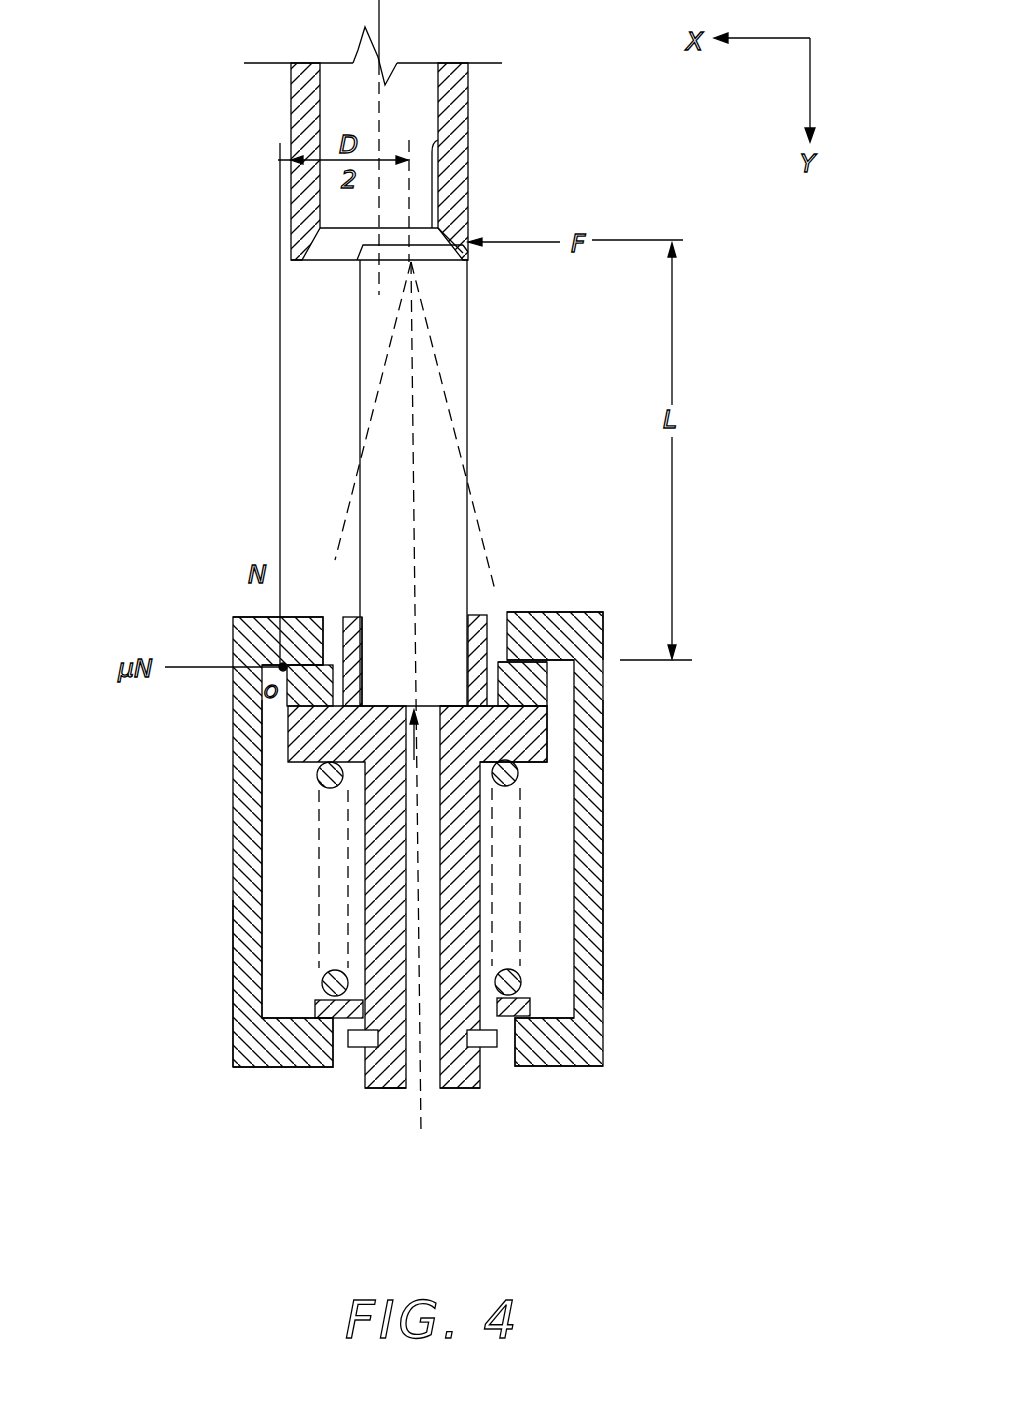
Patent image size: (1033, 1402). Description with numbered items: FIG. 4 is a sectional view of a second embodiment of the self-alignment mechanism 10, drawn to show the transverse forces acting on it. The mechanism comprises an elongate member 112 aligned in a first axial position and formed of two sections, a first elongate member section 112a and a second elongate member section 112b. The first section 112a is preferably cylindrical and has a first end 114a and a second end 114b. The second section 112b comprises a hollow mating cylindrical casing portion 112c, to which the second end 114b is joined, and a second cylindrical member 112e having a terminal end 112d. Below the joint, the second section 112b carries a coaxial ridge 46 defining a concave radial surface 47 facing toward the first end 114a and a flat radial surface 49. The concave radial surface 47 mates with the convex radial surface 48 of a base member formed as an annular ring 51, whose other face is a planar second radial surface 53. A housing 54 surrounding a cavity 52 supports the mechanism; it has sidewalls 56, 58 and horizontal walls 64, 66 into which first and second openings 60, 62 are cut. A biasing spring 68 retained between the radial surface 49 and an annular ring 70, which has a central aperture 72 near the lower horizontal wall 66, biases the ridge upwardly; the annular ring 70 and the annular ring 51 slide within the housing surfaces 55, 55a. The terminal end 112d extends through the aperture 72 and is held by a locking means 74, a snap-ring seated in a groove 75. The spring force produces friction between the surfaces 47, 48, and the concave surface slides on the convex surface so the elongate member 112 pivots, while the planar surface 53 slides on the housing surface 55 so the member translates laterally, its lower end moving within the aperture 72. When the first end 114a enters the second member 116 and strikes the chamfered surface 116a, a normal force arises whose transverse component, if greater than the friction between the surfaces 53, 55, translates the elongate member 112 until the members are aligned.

The alignment mechanism 10 is at (752, 505).
The coaxial ridge 46 is at (262, 812).
The concave radial surface 47 is at (545, 720).
The convex radial surface 48 is at (290, 700).
The flat radial surface 49 is at (533, 758).
The annular ring 51 is at (520, 690).
The cavity 52 is at (305, 858).
The second radial surface 53 is at (540, 667).
The housing 54 is at (620, 823).
The housing surface 55 is at (281, 668).
The housing surface 55a is at (240, 962).
The sidewall 56 is at (235, 850).
The sidewall 58 is at (605, 923).
The first opening 60 is at (333, 640).
The second opening 62 is at (333, 1069).
The horizontal wall 64 is at (525, 612).
The lower horizontal wall 66 is at (576, 1068).
The biasing spring 68 is at (507, 793).
The annular ring 70 is at (533, 998).
The central aperture 72 is at (506, 1048).
The locking means 74 is at (352, 1048).
The groove 75 is at (400, 1088).
The elongate member 112 is at (467, 375).
The first elongate member section 112a is at (467, 318).
The second elongate member section 112b is at (480, 893).
The mating cylindrical casing portion 112c is at (491, 640).
The terminal end 112d is at (470, 1090).
The second cylindrical member 112e is at (380, 937).
The first end 114a is at (468, 140).
The second end 114b is at (380, 703).
The second member 116 is at (468, 92).
The chamfered surface 116a is at (468, 215).